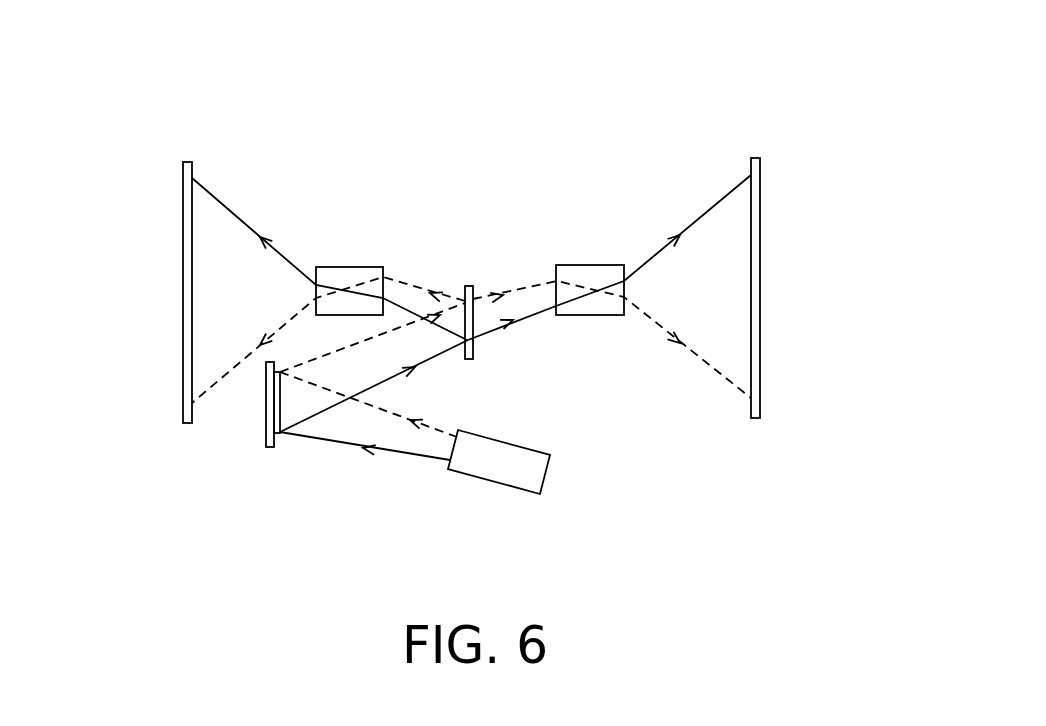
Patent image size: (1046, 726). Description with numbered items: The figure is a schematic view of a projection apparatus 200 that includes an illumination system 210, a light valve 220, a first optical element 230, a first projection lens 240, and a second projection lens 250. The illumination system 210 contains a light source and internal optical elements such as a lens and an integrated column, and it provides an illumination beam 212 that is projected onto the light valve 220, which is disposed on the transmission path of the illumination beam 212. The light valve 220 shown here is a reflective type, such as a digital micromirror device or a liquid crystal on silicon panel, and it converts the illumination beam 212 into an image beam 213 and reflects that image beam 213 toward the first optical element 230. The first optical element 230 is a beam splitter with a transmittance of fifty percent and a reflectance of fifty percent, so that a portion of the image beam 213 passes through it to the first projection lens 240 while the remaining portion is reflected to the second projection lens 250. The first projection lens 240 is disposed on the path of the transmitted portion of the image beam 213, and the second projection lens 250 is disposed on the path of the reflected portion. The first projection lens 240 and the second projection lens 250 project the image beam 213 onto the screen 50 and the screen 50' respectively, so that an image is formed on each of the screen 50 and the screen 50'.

The projection apparatus 200 is at (578, 113).
The screen 50 is at (799, 288).
The screen 50' is at (143, 292).
The illumination system 210 is at (525, 465).
The illumination beam 212 is at (356, 464).
The image beam 213 is at (410, 387).
The light valve 220 is at (278, 447).
The first optical element 230 is at (473, 348).
The first projection lens 240 is at (595, 277).
The second projection lens 250 is at (347, 280).